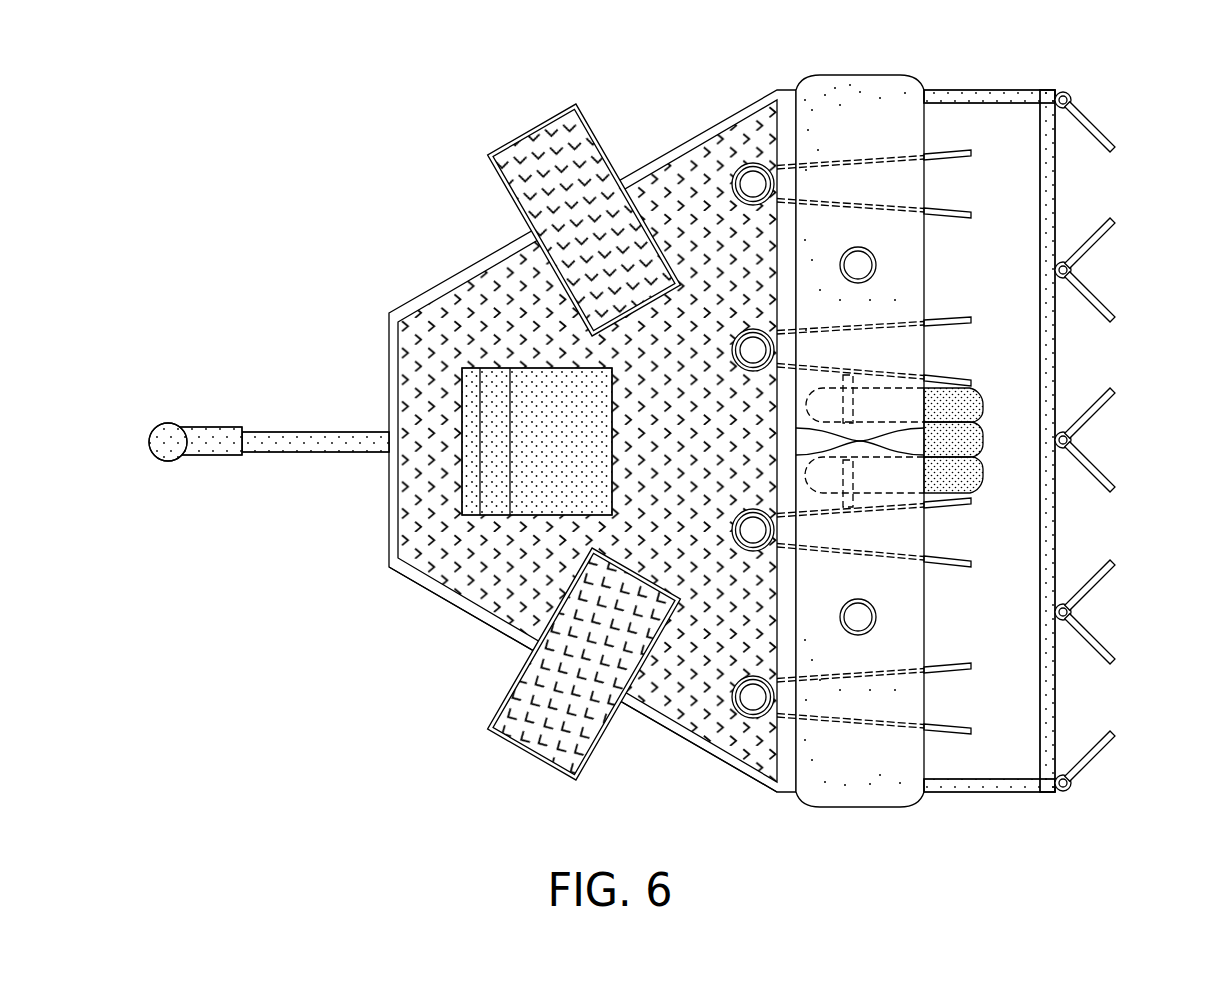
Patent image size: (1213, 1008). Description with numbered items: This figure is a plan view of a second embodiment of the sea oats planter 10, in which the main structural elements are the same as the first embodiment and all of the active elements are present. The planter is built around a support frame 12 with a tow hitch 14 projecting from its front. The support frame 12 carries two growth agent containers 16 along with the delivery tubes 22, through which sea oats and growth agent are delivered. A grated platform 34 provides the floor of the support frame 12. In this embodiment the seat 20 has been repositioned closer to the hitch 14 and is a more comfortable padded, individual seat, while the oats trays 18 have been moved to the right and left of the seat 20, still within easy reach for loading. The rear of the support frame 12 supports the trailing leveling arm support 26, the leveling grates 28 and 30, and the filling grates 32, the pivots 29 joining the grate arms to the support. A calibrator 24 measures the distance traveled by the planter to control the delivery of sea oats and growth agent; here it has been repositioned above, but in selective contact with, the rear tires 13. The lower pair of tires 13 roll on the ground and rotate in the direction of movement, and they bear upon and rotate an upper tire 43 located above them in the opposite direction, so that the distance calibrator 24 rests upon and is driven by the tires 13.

The sea oats planter 10 is at (314, 195).
The support frame 12 is at (383, 320).
The rear tires 13 is at (985, 404).
The tow hitch 14 is at (170, 432).
The growth agent containers 16 is at (860, 90).
The oats trays 18 is at (515, 188).
The seat 20 is at (525, 462).
The delivery tubes 22 is at (752, 185).
The calibrator 24 is at (986, 492).
The trailing leveling arm support 26 is at (1048, 793).
The leveling grates 28 is at (1086, 276).
The pivot 29 is at (1070, 93).
The leveling grates 30 is at (1106, 126).
The filling grates 32 is at (948, 157).
The grated platform 34 is at (462, 578).
The upper tire 43 is at (985, 441).